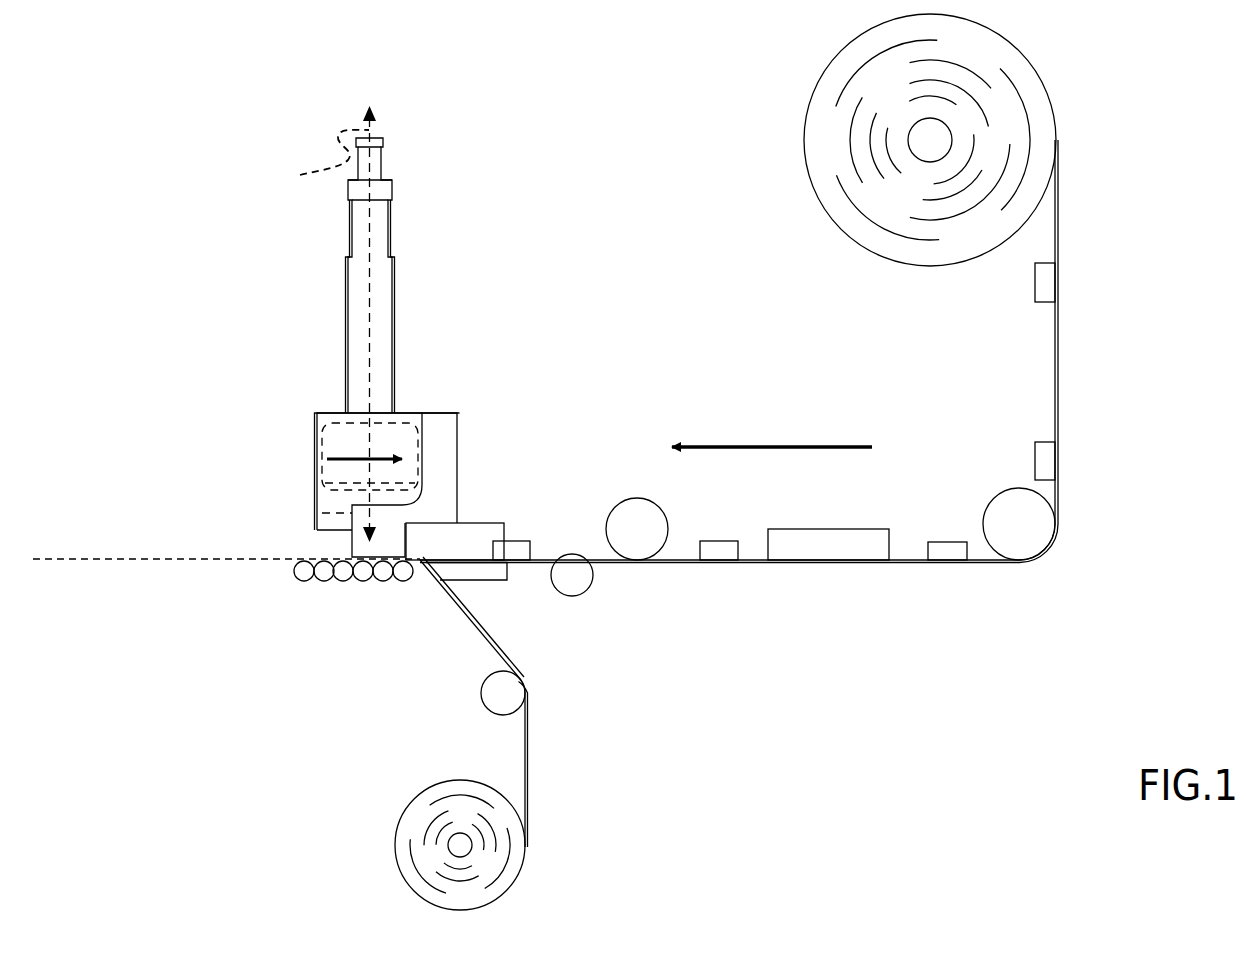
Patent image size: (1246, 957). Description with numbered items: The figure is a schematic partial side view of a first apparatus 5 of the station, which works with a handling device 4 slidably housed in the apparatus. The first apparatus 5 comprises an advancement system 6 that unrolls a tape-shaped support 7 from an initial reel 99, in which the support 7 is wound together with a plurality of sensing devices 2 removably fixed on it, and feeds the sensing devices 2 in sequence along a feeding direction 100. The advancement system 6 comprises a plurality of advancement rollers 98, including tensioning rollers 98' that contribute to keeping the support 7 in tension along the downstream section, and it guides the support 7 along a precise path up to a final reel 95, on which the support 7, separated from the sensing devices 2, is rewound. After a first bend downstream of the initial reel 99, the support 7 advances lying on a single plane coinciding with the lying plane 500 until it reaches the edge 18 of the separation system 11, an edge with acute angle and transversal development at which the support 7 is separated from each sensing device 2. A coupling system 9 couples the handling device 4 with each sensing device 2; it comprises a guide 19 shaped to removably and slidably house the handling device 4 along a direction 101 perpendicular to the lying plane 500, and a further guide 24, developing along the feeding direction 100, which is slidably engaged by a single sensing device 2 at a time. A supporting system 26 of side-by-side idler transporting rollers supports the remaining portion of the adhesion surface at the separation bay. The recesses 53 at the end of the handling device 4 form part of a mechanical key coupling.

The initial reel 99 is at (812, 66).
The first apparatus 5 is at (1167, 230).
The support 7 is at (1059, 365).
The sensing device 2 is at (1040, 285).
The feeding direction 100 is at (870, 445).
The advancement roller 98 is at (733, 622).
The tensioning roller 98' is at (638, 564).
The advancement system 6 is at (1060, 568).
The final reel 95 is at (402, 803).
The separation system 11 is at (423, 590).
The edge 18 is at (437, 575).
The supporting system 26 is at (305, 592).
The lying plane 500 is at (65, 560).
The coupling system 9 is at (430, 400).
The guide 19 is at (305, 412).
The further guide 24 is at (465, 535).
The handling device 4 is at (325, 292).
The recess 53 is at (393, 240).
The direction 101 is at (306, 162).